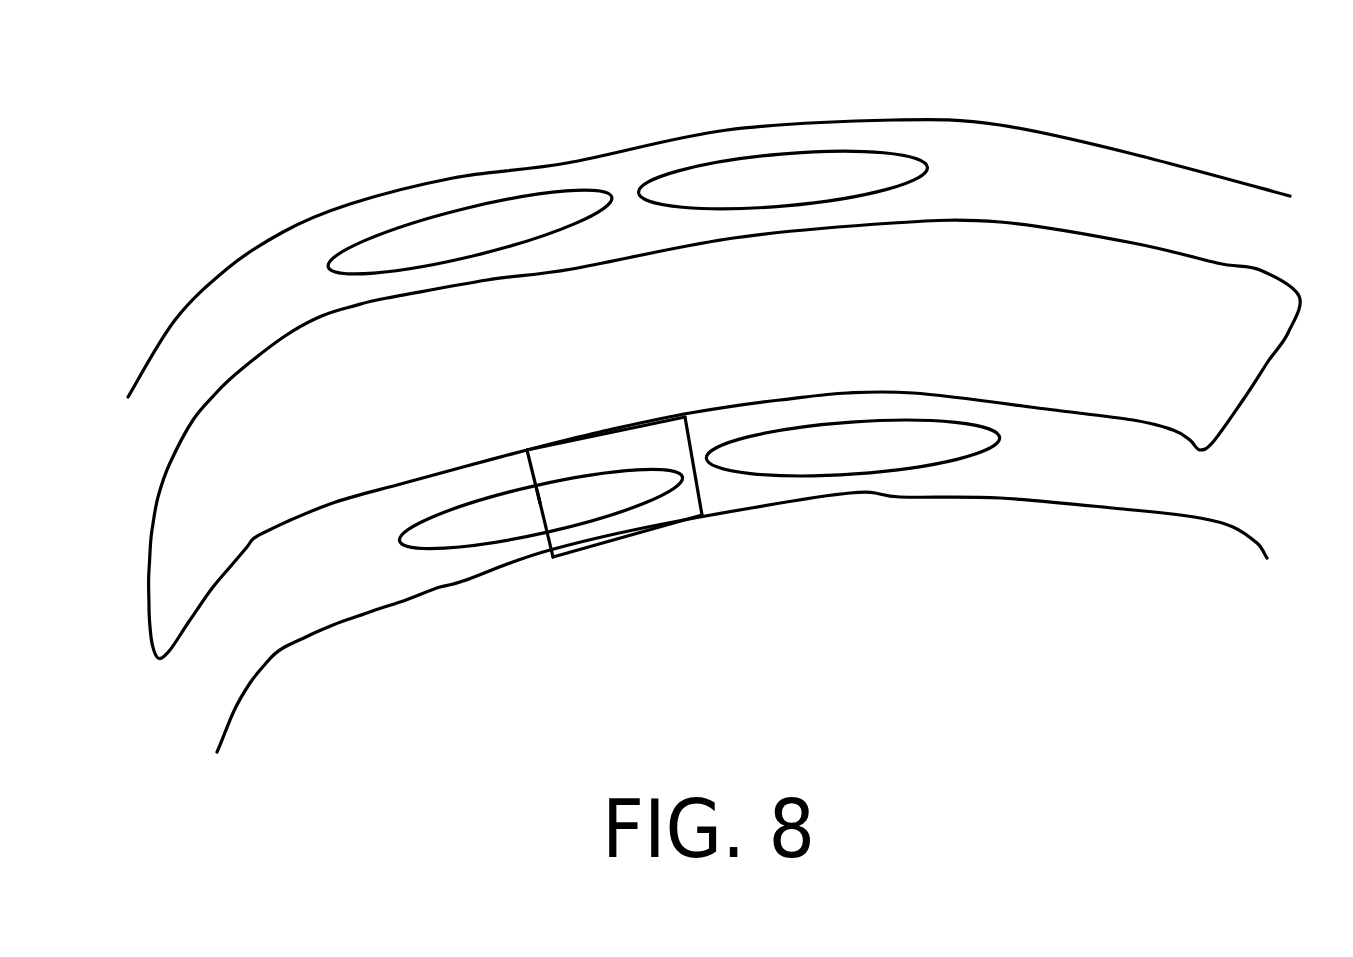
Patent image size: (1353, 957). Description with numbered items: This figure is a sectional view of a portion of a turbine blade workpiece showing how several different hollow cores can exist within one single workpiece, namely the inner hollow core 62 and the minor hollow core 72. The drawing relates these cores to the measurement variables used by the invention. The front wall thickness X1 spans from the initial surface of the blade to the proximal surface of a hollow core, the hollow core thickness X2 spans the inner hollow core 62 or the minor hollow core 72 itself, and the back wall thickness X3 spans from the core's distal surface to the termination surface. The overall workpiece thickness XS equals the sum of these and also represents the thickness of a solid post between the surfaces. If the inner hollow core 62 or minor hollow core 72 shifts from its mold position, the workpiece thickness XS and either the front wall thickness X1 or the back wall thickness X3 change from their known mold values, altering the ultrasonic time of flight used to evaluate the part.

The inner hollow core 62 is at (800, 341).
The minor hollow core 72 is at (483, 223).
The front wall thickness X1 is at (552, 543).
The hollow core thickness X2 is at (540, 492).
The back wall thickness X3 is at (527, 465).
The workpiece thickness XS is at (703, 496).